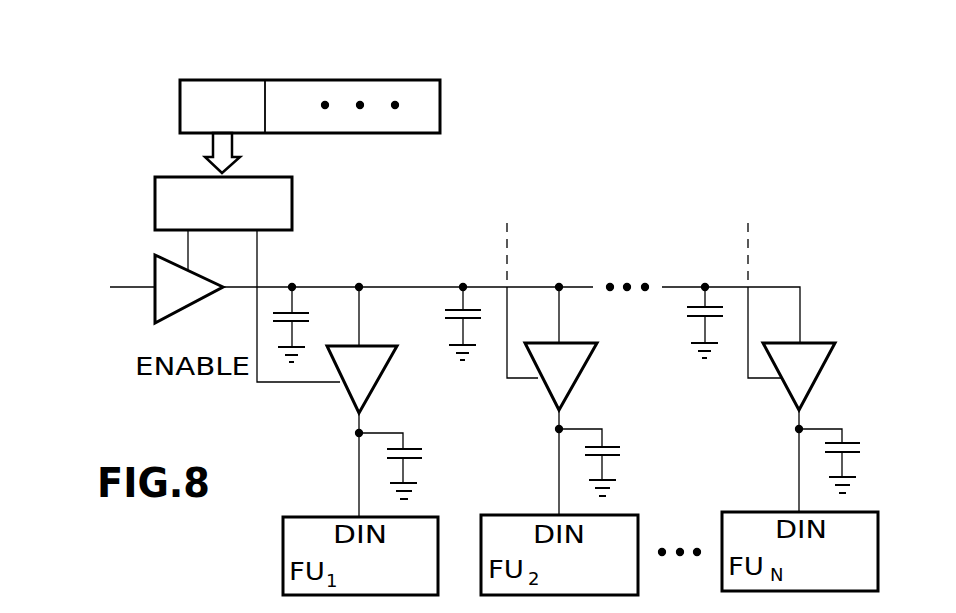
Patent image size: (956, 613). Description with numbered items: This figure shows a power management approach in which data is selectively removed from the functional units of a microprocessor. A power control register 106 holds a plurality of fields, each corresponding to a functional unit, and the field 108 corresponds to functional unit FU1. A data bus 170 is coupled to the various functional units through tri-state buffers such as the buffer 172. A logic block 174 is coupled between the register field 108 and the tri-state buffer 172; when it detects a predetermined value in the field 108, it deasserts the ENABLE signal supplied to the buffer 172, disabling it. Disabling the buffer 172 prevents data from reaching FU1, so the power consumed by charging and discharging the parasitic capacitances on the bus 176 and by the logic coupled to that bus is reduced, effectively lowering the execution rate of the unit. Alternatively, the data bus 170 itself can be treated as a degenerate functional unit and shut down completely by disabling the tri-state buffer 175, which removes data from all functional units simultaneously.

The power control register 106 is at (158, 82).
The power control register field 108 is at (180, 110).
The logic block 174 is at (293, 197).
The tri-state buffer 175 is at (150, 268).
The data bus 170 is at (128, 292).
The tri-state buffer 172 is at (378, 388).
The bus 176 is at (358, 466).